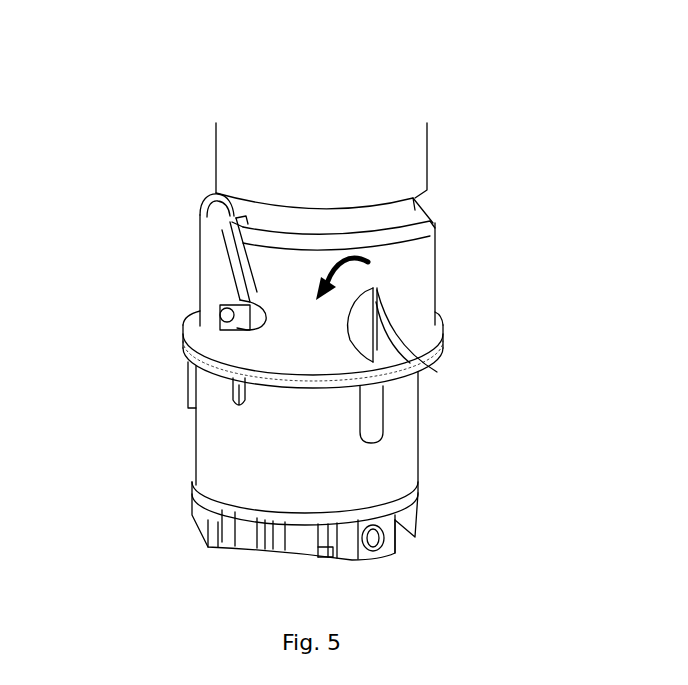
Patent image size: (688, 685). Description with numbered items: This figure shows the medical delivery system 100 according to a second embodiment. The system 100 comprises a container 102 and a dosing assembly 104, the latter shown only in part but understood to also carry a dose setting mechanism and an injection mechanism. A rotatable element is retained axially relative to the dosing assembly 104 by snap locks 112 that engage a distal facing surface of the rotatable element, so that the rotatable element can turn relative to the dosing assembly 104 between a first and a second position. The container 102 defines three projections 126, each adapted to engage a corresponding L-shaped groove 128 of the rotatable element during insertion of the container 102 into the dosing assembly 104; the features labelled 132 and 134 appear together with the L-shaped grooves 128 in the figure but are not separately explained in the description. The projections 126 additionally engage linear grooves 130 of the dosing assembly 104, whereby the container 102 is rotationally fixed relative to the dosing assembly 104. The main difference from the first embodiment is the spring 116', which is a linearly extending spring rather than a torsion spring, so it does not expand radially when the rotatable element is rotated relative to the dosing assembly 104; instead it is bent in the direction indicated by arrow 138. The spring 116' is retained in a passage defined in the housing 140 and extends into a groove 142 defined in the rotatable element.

The medical delivery system 100 is at (550, 279).
The container 102 is at (360, 159).
The dosing assembly 104 is at (333, 485).
The snap locks 112 is at (428, 212).
The linearly extending spring 116' is at (430, 340).
The projections 126 is at (224, 313).
The L-shaped grooves 128 is at (250, 276).
The linear grooves 130 is at (240, 226).
The latch arm 132 is at (151, 243).
The latch hook 134 is at (169, 296).
The arrow 138 is at (368, 262).
The housing 140 is at (188, 387).
The groove 142 is at (355, 318).